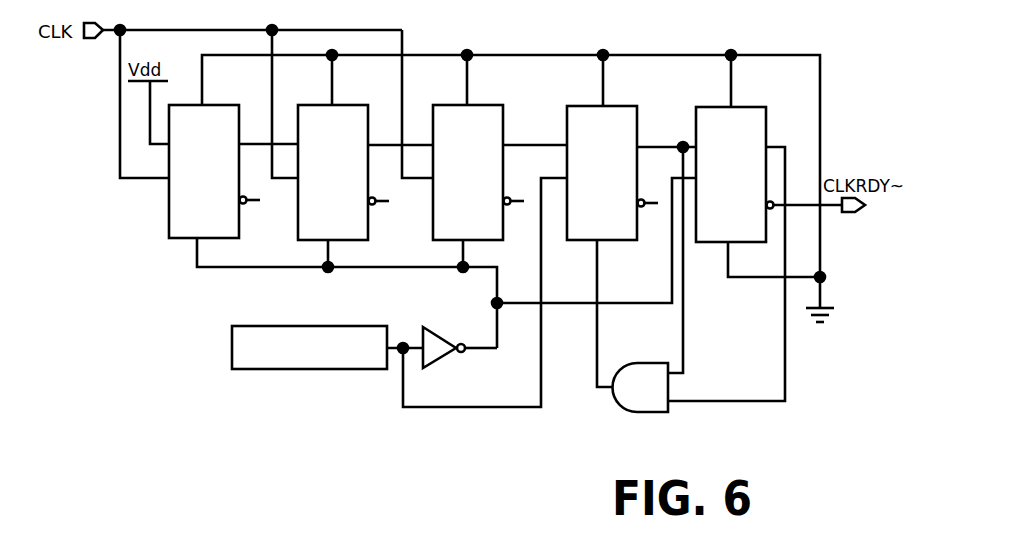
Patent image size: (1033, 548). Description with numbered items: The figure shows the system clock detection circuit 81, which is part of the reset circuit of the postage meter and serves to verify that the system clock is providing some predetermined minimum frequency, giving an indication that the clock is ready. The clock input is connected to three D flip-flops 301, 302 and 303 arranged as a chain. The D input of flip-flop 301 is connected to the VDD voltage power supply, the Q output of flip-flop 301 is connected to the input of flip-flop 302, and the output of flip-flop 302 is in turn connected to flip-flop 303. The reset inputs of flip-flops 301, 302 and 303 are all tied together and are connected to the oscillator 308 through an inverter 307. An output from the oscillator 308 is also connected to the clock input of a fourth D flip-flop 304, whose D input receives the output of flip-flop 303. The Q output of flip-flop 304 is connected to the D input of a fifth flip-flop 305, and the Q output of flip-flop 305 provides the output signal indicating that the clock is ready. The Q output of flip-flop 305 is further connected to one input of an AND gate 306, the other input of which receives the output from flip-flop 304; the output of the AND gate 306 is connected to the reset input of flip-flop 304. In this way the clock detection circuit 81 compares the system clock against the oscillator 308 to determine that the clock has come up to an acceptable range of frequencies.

The D flip-flop 301 is at (213, 105).
The D flip-flop 302 is at (342, 105).
The D flip-flop 303 is at (482, 105).
The D flip-flop 304 is at (618, 106).
The D flip-flop 305 is at (740, 107).
The AND gate 306 is at (647, 412).
The inverter 307 is at (440, 358).
The oscillator 308 is at (277, 369).
The system clock detection circuit 81 is at (463, 455).